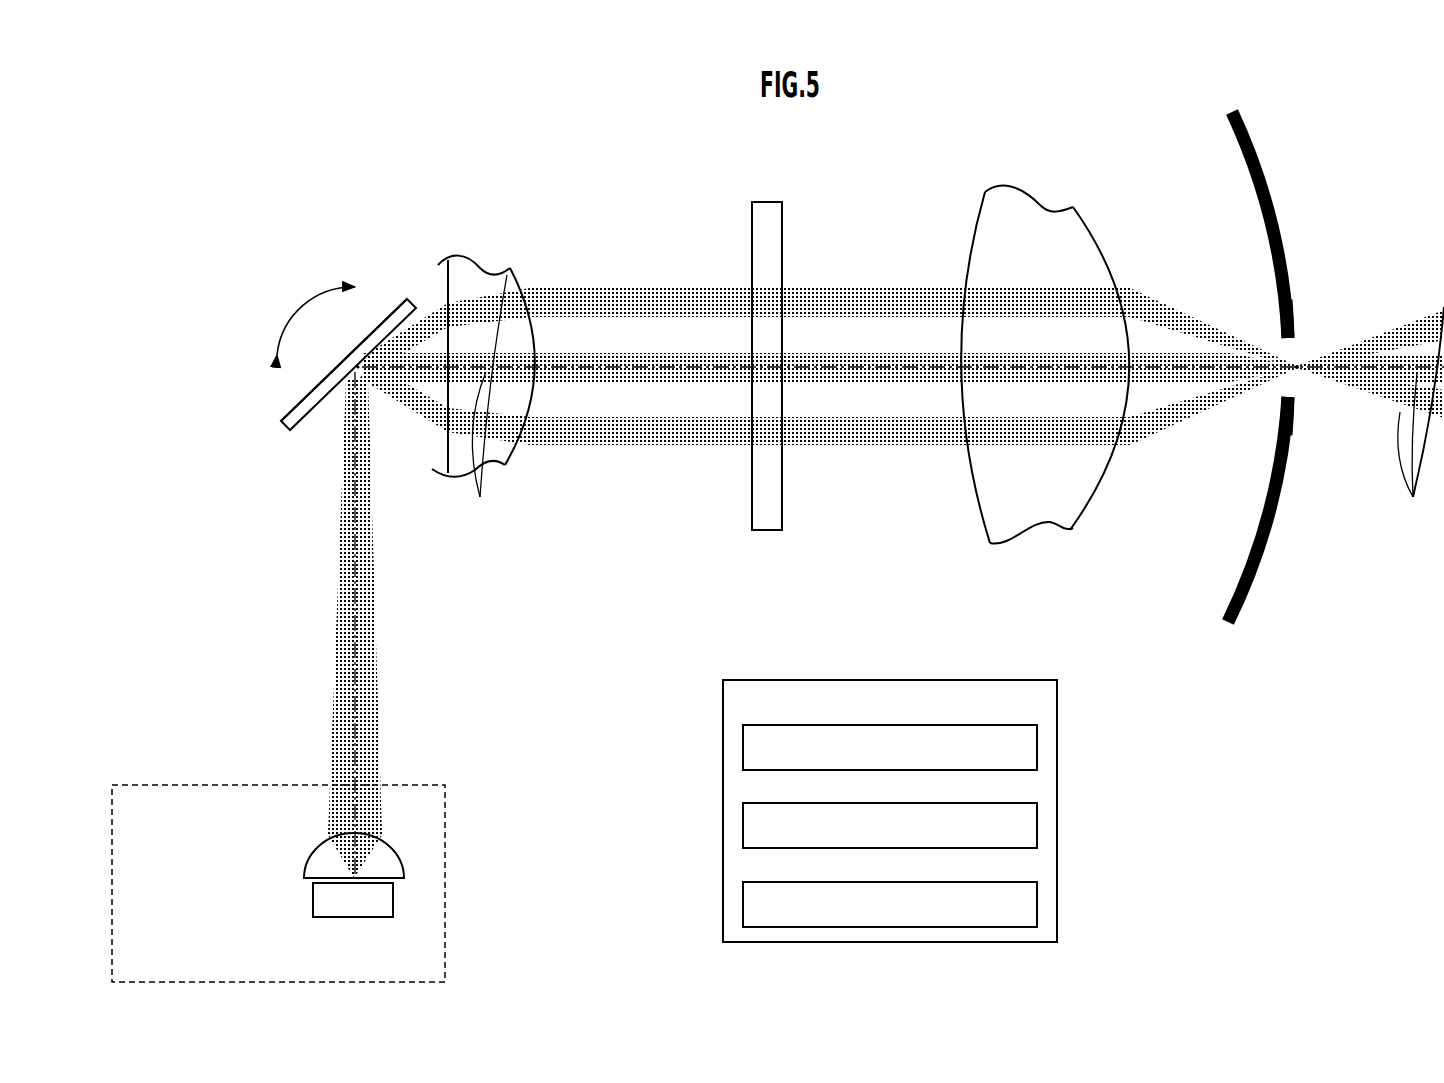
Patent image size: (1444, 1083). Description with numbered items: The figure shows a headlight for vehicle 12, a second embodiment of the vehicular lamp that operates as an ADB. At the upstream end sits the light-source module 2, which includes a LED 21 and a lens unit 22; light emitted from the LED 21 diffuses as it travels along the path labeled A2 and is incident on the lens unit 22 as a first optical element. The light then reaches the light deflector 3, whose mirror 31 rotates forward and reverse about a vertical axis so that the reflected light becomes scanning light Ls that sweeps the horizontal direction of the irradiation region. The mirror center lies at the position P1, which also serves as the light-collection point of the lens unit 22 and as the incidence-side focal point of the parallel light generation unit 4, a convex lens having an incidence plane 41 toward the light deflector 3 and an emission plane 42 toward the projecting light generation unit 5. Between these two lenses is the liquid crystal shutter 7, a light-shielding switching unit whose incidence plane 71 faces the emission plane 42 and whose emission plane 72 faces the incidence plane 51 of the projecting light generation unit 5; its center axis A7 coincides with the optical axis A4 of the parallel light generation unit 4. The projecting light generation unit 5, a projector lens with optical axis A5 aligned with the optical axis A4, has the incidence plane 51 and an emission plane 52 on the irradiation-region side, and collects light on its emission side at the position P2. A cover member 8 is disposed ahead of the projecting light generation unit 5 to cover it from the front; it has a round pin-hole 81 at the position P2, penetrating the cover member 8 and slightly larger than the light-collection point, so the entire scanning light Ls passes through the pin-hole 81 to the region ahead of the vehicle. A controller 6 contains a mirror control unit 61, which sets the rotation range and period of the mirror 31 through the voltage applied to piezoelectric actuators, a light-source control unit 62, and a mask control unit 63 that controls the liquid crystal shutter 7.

The headlight for vehicle 12 is at (722, 180).
The light-source module 2 is at (298, 838).
The LED 21 is at (313, 897).
The lens unit 22 is at (400, 856).
The light deflector 3 is at (330, 335).
The mirror 31 is at (285, 412).
The parallel light generation unit 4 is at (506, 362).
The incidence plane 41 is at (448, 468).
The emission plane 42 is at (538, 328).
The projecting light generation unit 5 is at (1050, 365).
The incidence plane 51 is at (975, 250).
The emission plane 52 is at (1112, 276).
The controller 6 is at (890, 785).
The mirror control unit 61 is at (990, 725).
The light-source control unit 62 is at (990, 803).
The mask control unit 63 is at (990, 882).
The liquid crystal shutter 7 is at (765, 366).
The incidence plane 71 is at (752, 526).
The emission plane 72 is at (782, 526).
The cover member 8 is at (1297, 367).
The pin-hole 81 is at (1290, 343).
The light beam from light source A2 is at (355, 752).
The optical axis A4 is at (520, 388).
The optical axis A5 is at (1100, 370).
The center axis A7 is at (768, 368).
The position P1 is at (360, 370).
The position P2 is at (1297, 372).
The scanning light Ls is at (941, 402).